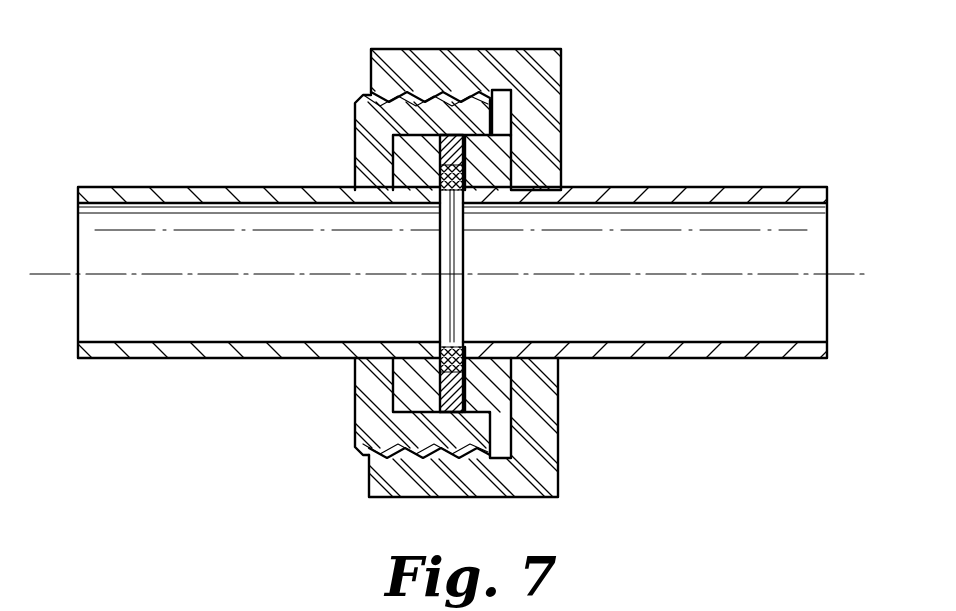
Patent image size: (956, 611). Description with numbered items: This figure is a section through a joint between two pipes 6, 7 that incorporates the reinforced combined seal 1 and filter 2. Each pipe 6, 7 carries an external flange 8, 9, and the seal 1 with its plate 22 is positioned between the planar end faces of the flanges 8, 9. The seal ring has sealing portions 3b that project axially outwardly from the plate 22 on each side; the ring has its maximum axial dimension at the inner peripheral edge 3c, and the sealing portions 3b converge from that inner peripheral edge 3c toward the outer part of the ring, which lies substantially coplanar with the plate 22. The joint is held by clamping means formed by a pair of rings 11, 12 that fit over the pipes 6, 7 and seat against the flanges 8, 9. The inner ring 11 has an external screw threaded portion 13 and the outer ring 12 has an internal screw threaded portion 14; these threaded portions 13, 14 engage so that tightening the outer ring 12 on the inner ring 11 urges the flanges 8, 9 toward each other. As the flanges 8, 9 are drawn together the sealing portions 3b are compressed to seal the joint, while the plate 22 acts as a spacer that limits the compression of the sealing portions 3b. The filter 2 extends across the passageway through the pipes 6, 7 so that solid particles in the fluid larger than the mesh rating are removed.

The seal 1 is at (443, 360).
The filter 2 is at (440, 329).
The sealing portions 3b is at (440, 187).
The inner peripheral edge 3c is at (458, 343).
The pipe 6 is at (157, 350).
The pipe 7 is at (668, 365).
The external flange 8 is at (402, 400).
The external flange 9 is at (497, 398).
The clamping ring 11 is at (360, 435).
The clamping ring 12 is at (532, 467).
The external screw threaded portion 13 is at (362, 98).
The internal screw threaded portion 14 is at (480, 97).
The plate 22 is at (465, 152).